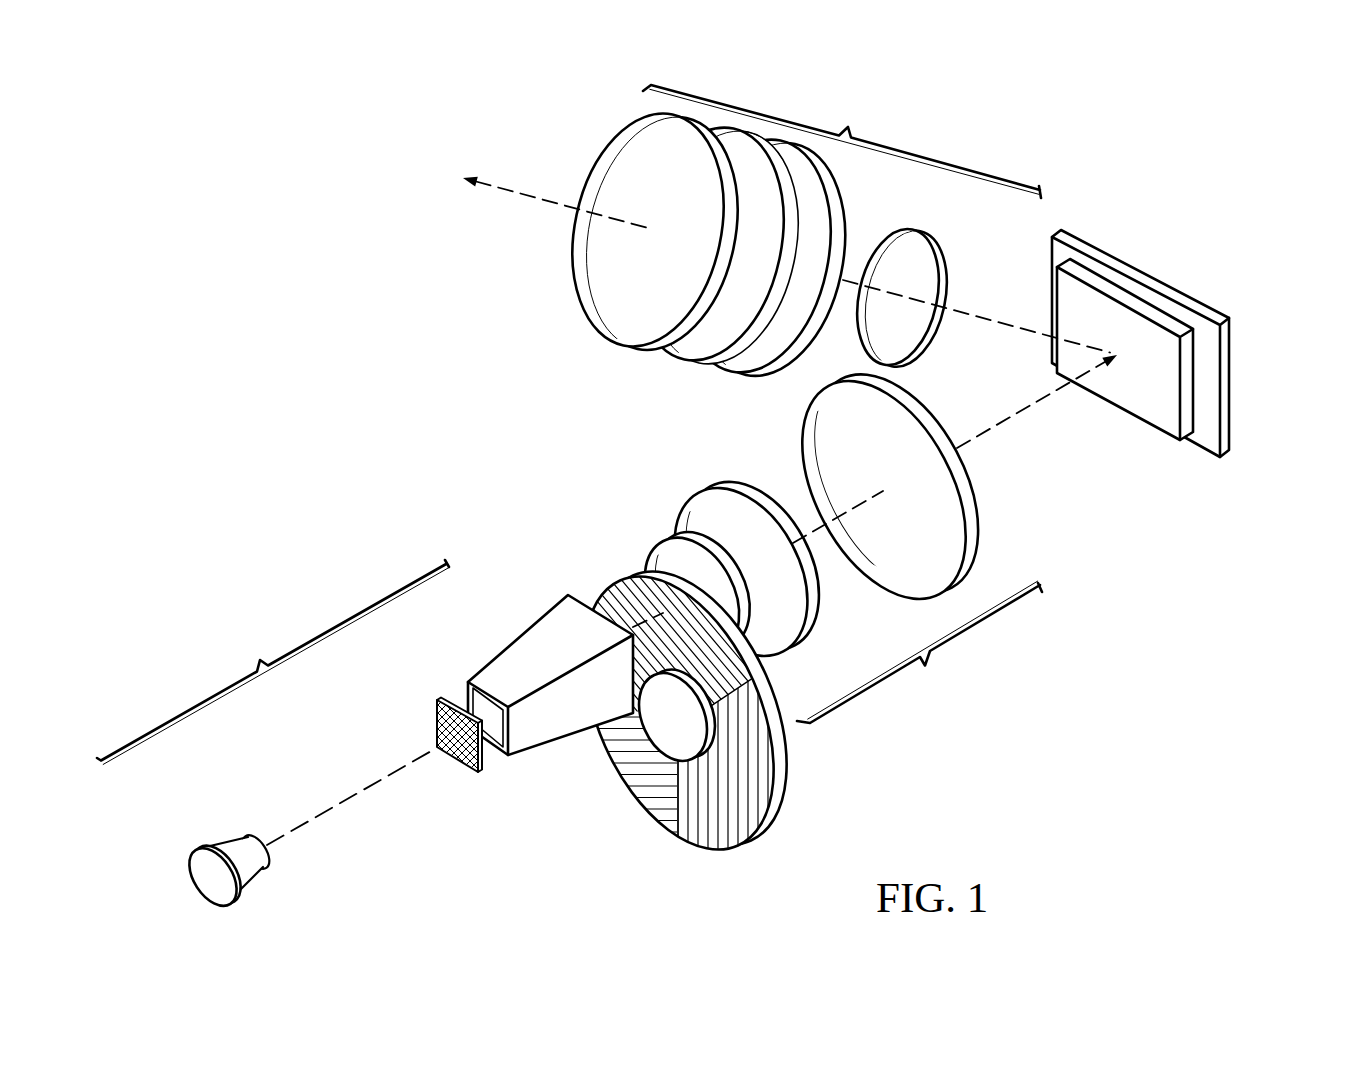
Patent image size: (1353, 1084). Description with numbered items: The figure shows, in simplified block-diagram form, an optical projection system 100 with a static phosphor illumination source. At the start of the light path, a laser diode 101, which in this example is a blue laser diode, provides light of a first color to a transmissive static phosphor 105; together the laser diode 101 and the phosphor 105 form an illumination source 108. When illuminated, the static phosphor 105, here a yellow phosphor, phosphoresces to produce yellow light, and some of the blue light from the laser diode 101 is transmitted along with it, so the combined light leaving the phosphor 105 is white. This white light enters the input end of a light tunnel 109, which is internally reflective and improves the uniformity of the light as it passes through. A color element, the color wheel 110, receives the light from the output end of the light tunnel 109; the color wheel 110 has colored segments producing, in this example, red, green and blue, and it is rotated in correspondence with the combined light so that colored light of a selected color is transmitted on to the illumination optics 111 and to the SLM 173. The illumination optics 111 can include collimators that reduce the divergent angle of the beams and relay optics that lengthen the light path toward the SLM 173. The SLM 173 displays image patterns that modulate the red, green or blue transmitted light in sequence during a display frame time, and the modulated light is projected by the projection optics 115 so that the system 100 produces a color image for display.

The projection system 100 is at (228, 275).
The laser diode 101 is at (195, 887).
The static phosphor 105 is at (424, 680).
The illumination source 108 is at (273, 662).
The light tunnel 109 is at (516, 636).
The color wheel 110 is at (654, 850).
The illumination optics 111 is at (834, 535).
The projection optics 115 is at (796, 237).
The SLM 173 is at (1227, 387).